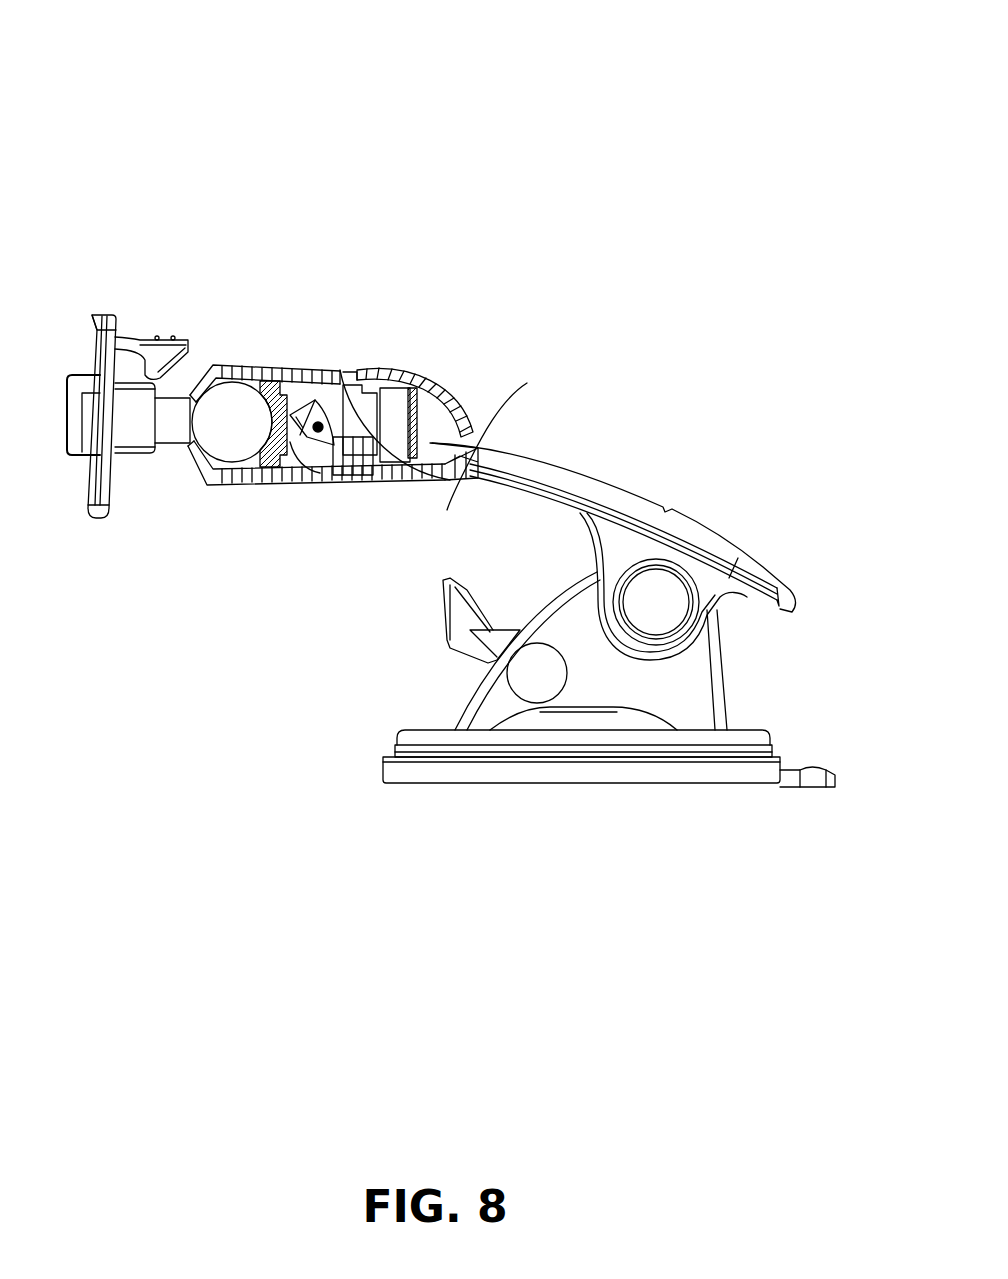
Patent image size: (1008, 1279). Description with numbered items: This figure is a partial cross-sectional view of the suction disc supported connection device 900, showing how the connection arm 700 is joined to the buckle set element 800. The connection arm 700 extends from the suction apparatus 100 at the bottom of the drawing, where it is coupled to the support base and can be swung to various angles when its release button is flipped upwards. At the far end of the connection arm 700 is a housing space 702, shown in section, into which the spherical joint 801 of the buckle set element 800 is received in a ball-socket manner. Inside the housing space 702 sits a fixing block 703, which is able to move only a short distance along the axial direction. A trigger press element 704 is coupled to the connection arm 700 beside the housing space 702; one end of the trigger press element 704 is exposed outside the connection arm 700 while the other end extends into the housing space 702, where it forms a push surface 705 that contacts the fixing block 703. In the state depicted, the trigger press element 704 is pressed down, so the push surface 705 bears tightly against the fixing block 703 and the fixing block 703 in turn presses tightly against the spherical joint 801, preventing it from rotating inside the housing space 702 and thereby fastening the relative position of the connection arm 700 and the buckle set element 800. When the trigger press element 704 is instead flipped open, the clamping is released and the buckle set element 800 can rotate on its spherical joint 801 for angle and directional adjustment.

The suction disc supported connection device 900 is at (497, 200).
The buckle set element 800 is at (132, 400).
The spherical joint 801 is at (242, 410).
The housing space 702 is at (326, 395).
The trigger press element 704 is at (407, 385).
The connection arm 700 is at (600, 485).
The fixing block 703 is at (260, 488).
The push surface 705 is at (293, 488).
The suction apparatus 100 is at (733, 700).